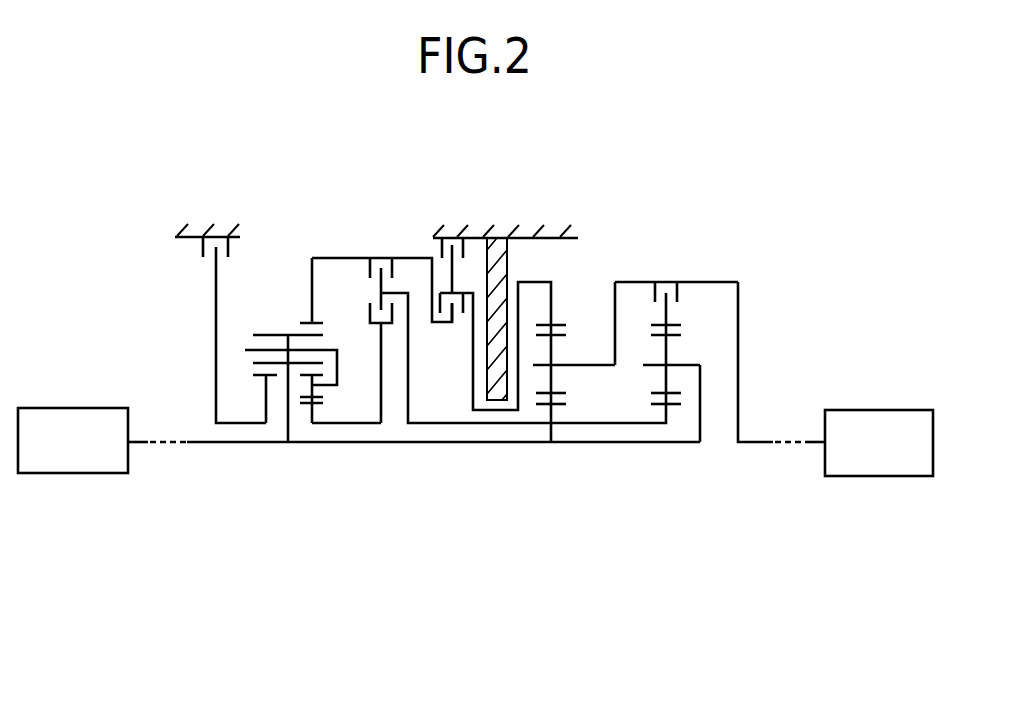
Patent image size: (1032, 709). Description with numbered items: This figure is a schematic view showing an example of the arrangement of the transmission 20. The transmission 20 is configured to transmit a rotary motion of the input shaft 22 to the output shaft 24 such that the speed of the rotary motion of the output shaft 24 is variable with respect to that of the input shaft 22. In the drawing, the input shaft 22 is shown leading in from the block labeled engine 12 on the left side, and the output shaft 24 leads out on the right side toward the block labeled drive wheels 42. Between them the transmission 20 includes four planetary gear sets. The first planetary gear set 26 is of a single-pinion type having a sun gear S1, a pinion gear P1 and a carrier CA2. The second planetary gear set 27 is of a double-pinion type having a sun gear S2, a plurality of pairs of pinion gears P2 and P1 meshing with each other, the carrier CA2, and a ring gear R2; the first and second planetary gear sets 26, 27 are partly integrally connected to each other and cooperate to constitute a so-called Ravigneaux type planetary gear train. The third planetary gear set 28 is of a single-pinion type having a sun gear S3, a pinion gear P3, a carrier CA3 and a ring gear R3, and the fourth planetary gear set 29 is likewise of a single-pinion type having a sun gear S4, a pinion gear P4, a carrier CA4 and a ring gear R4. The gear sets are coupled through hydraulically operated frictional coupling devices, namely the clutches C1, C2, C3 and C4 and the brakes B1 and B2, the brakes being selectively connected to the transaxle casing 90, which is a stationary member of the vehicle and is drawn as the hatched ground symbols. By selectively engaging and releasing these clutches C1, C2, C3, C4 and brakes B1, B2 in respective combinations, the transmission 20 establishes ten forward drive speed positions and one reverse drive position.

The transmission 20 is at (617, 151).
The transaxle casing 90 is at (220, 237).
The brake B1 is at (234, 330).
The brake B2 is at (456, 248).
The clutch C1 is at (381, 272).
The clutch C2 is at (366, 358).
The clutch C3 is at (461, 295).
The clutch C4 is at (665, 280).
The pinion gear P1 is at (258, 334).
The sun gear S1 is at (259, 377).
The ring gear R2 is at (304, 322).
The carrier CA2 is at (322, 350).
The pinion gear P2 is at (318, 397).
The sun gear S2 is at (318, 404).
The ring gear R3 is at (558, 325).
The carrier CA3 is at (557, 365).
The pinion gear P3 is at (558, 393).
The sun gear S3 is at (558, 405).
The ring gear R4 is at (673, 325).
The carrier CA4 is at (674, 365).
The pinion gear P4 is at (656, 393).
The sun gear S4 is at (656, 405).
The engine 12 is at (73, 419).
The input shaft 22 is at (203, 443).
The output shaft 24 is at (760, 444).
The first planetary gear set 26 is at (270, 405).
The second planetary gear set 27 is at (313, 380).
The third planetary gear set 28 is at (575, 403).
The fourth planetary gear set 29 is at (672, 381).
The drive wheels 42 is at (877, 421).